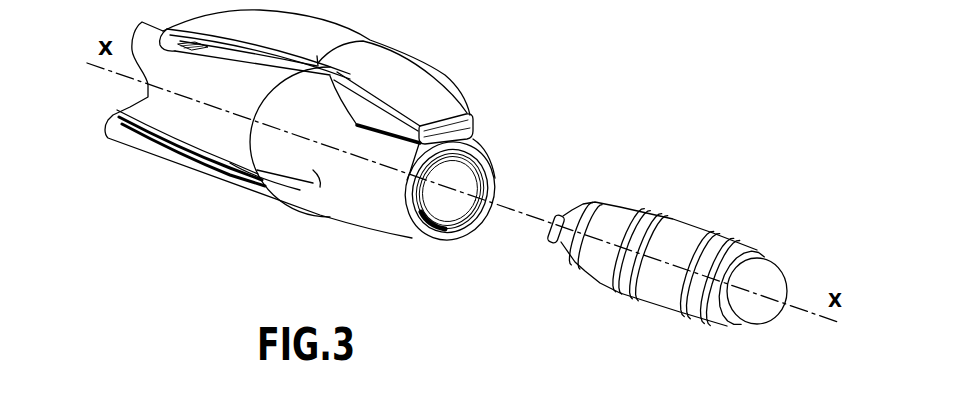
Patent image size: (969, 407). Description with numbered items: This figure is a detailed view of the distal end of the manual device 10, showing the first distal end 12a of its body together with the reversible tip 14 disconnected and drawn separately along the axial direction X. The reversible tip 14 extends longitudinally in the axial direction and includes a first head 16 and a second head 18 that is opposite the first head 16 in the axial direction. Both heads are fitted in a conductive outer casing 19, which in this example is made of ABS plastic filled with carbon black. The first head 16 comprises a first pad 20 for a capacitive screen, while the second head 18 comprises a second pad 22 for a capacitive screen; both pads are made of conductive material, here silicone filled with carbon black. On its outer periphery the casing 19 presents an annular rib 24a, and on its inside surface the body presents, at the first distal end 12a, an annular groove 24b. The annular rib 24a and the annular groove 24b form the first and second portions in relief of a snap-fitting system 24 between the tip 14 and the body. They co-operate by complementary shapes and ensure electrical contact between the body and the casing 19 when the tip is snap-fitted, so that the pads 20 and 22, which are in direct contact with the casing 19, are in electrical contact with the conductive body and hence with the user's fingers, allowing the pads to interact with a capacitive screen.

The manual device 10 is at (826, 5).
The first distal end 12a is at (300, 124).
The reversible tip 14 is at (680, 246).
The first head 16 is at (782, 319).
The second head 18 is at (545, 215).
The conductive outer casing 19 is at (636, 212).
The first pad 20 is at (781, 277).
The second pad 22 is at (549, 229).
The snap-fitting system 24 is at (563, 336).
The annular rib 24a is at (642, 296).
The annular groove 24b is at (462, 221).